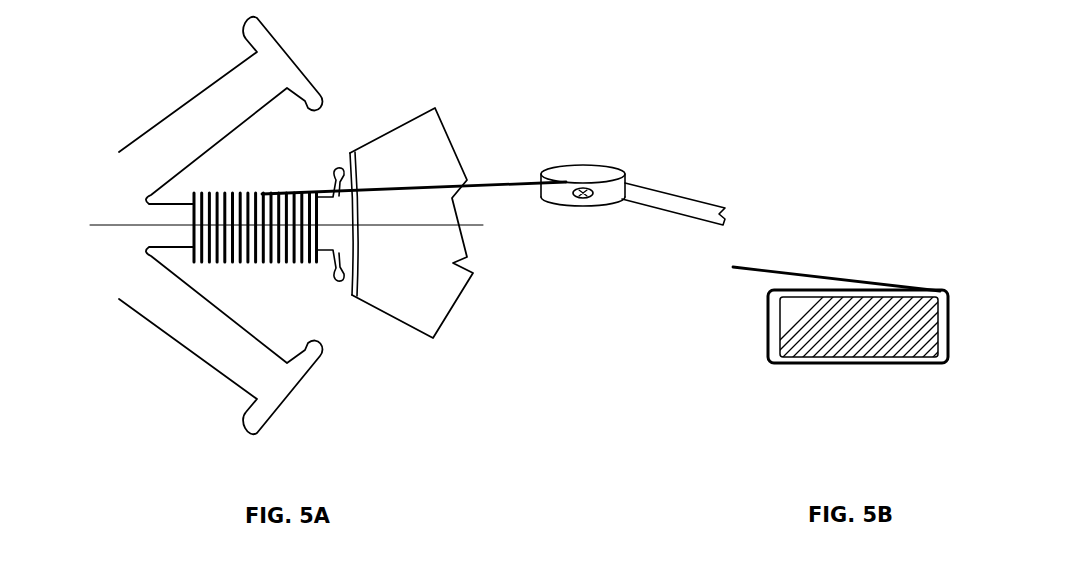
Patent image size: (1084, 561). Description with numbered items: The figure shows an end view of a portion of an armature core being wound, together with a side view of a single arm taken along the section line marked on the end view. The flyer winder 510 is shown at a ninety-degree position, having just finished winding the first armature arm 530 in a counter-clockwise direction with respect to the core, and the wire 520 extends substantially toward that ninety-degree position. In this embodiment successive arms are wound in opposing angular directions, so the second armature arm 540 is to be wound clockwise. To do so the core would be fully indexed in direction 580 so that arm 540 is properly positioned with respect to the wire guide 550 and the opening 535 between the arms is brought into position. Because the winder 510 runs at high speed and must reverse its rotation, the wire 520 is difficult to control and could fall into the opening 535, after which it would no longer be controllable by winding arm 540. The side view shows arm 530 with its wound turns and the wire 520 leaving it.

In FIG. 5A, the flyer winder 510 is at (617, 168).
In FIG. 5A, the wire 520 is at (477, 178).
In FIG. 5B, the wire 520 is at (825, 275).
In FIG. 5A, the first armature arm 530 is at (323, 262).
In FIG. 5B, the first armature arm 530 is at (822, 363).
In FIG. 5A, the opening 535 is at (340, 125).
In FIG. 5A, the second armature arm 540 is at (228, 130).
In FIG. 5A, the wire guide 550 is at (473, 275).
In FIG. 5A, the direction 580 is at (178, 362).